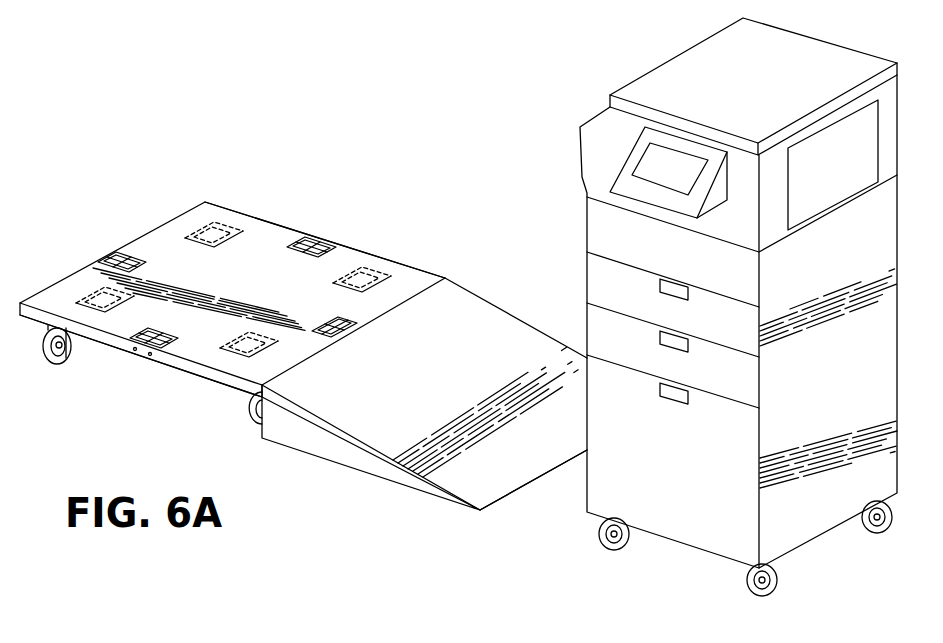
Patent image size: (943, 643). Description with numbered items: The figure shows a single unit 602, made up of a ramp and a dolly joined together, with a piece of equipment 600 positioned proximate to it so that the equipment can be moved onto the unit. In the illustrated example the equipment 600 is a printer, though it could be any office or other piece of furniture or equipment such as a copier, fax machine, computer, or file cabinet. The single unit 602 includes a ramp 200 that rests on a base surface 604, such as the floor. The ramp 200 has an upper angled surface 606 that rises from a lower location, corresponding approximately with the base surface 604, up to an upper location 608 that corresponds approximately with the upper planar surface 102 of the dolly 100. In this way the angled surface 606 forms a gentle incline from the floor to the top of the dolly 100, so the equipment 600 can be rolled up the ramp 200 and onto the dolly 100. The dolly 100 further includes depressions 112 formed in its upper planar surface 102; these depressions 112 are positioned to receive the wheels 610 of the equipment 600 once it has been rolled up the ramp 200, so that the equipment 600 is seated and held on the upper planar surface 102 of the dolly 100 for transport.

The dolly 100 is at (171, 243).
The upper planar surface 102 is at (267, 283).
The depressions 112 is at (100, 303).
The ramp 200 is at (388, 432).
The equipment 600 is at (676, 93).
The single unit 602 is at (374, 157).
The base surface 604 is at (167, 428).
The upper angled surface 606 is at (483, 487).
The upper location 608 is at (436, 296).
The wheels 610 is at (622, 549).